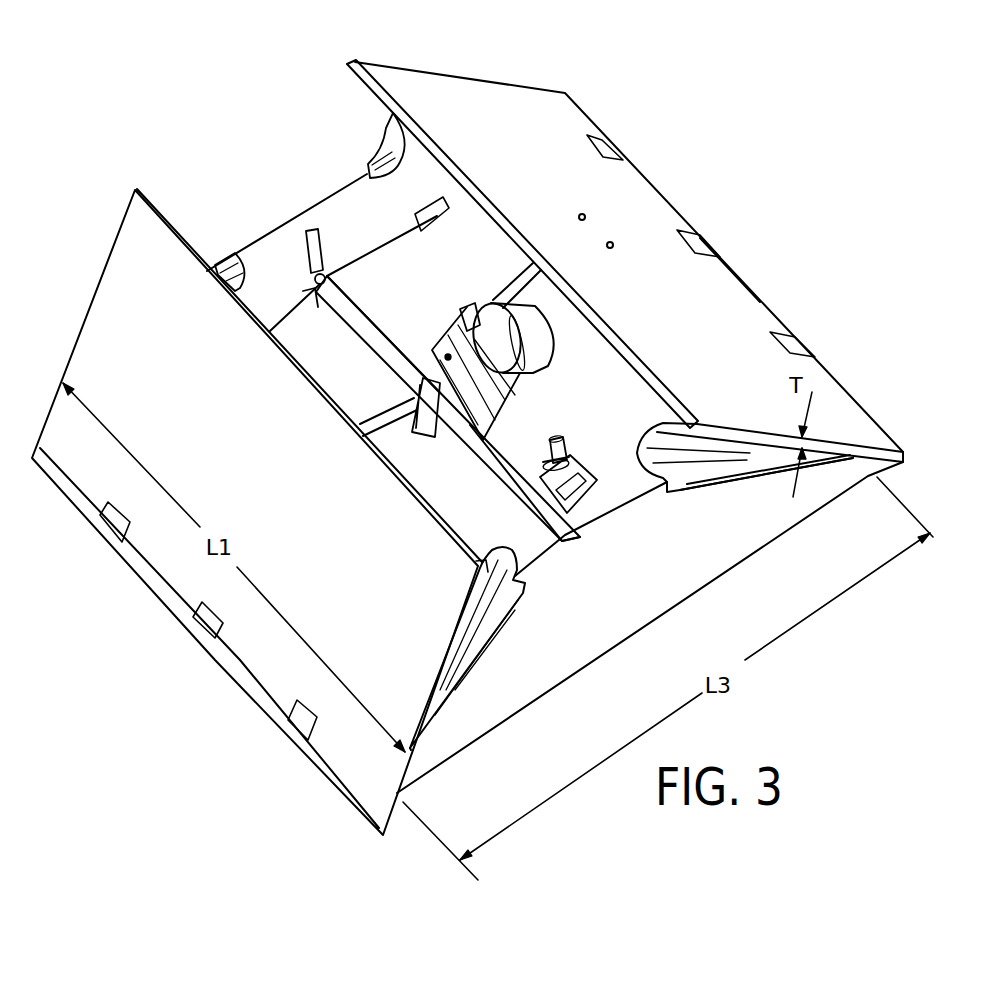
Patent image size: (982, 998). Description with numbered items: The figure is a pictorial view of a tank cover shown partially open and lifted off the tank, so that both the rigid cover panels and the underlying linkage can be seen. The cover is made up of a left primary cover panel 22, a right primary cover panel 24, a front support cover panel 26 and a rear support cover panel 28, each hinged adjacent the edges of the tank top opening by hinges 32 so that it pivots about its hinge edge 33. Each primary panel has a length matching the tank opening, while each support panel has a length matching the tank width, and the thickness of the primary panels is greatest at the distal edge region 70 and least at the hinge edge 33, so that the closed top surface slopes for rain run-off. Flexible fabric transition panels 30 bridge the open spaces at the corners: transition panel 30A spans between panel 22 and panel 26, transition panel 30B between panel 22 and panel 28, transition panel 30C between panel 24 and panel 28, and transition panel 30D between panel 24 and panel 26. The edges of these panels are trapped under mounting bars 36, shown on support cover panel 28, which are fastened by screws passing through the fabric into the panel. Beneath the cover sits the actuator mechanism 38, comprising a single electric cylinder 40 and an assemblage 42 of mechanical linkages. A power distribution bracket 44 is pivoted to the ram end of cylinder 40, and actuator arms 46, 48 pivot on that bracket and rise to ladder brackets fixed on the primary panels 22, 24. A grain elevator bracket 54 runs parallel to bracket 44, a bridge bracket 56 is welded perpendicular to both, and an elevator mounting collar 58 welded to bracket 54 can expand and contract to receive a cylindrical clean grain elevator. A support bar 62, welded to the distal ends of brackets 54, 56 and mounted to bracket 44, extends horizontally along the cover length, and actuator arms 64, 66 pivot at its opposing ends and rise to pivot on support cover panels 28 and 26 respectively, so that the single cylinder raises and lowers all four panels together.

The left primary cover panel 22 is at (241, 478).
The right primary cover panel 24 is at (649, 309).
The front support cover panel 26 is at (300, 222).
The rear support cover panel 28 is at (598, 617).
The transition panels 30 is at (708, 474).
The flexible transition panel 30A is at (243, 260).
The flexible transition panel 30B is at (478, 645).
The flexible transition panel 30C is at (783, 456).
The flexible transition panel 30D is at (376, 160).
The hinges 32 is at (700, 238).
The hinge edge 33 is at (747, 281).
The mounting bars 36 is at (820, 460).
The actuator mechanism 38 is at (358, 300).
The electric cylinder 40 is at (535, 436).
The assemblage of mechanical linkages 42 is at (378, 322).
The power distribution bracket 44 is at (468, 306).
The actuator arm 46 is at (378, 423).
The actuator arm 48 is at (511, 281).
The grain elevator bracket 54 is at (510, 388).
The bridge bracket 56 is at (472, 410).
The elevator mounting collar 58 is at (548, 343).
The support bar 62 is at (503, 460).
The actuator arm 64 is at (342, 297).
The actuator arm 66 is at (550, 523).
The distal edge region 70 is at (382, 78).